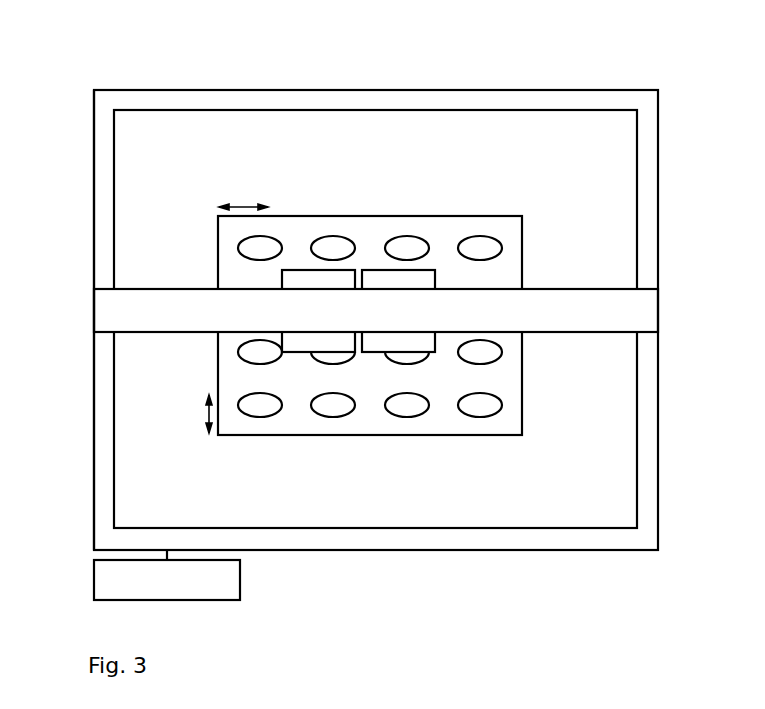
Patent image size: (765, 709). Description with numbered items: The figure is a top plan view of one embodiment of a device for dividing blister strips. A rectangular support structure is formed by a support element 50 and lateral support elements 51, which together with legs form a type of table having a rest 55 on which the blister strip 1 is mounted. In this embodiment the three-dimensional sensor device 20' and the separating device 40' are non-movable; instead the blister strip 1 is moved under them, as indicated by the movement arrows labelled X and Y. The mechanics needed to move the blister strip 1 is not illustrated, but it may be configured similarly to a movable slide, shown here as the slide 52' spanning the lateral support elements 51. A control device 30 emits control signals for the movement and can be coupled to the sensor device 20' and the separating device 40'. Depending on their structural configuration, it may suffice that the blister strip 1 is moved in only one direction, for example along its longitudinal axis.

The blister strip 1 is at (376, 322).
The non-movable 3D-sensor device 20' is at (331, 190).
The non-movable separating device 40' is at (420, 190).
The control device 30 is at (167, 581).
The support element 50 is at (157, 102).
The lateral support element 51 is at (103, 132).
The slide 52' is at (411, 303).
The rest 55 is at (587, 493).